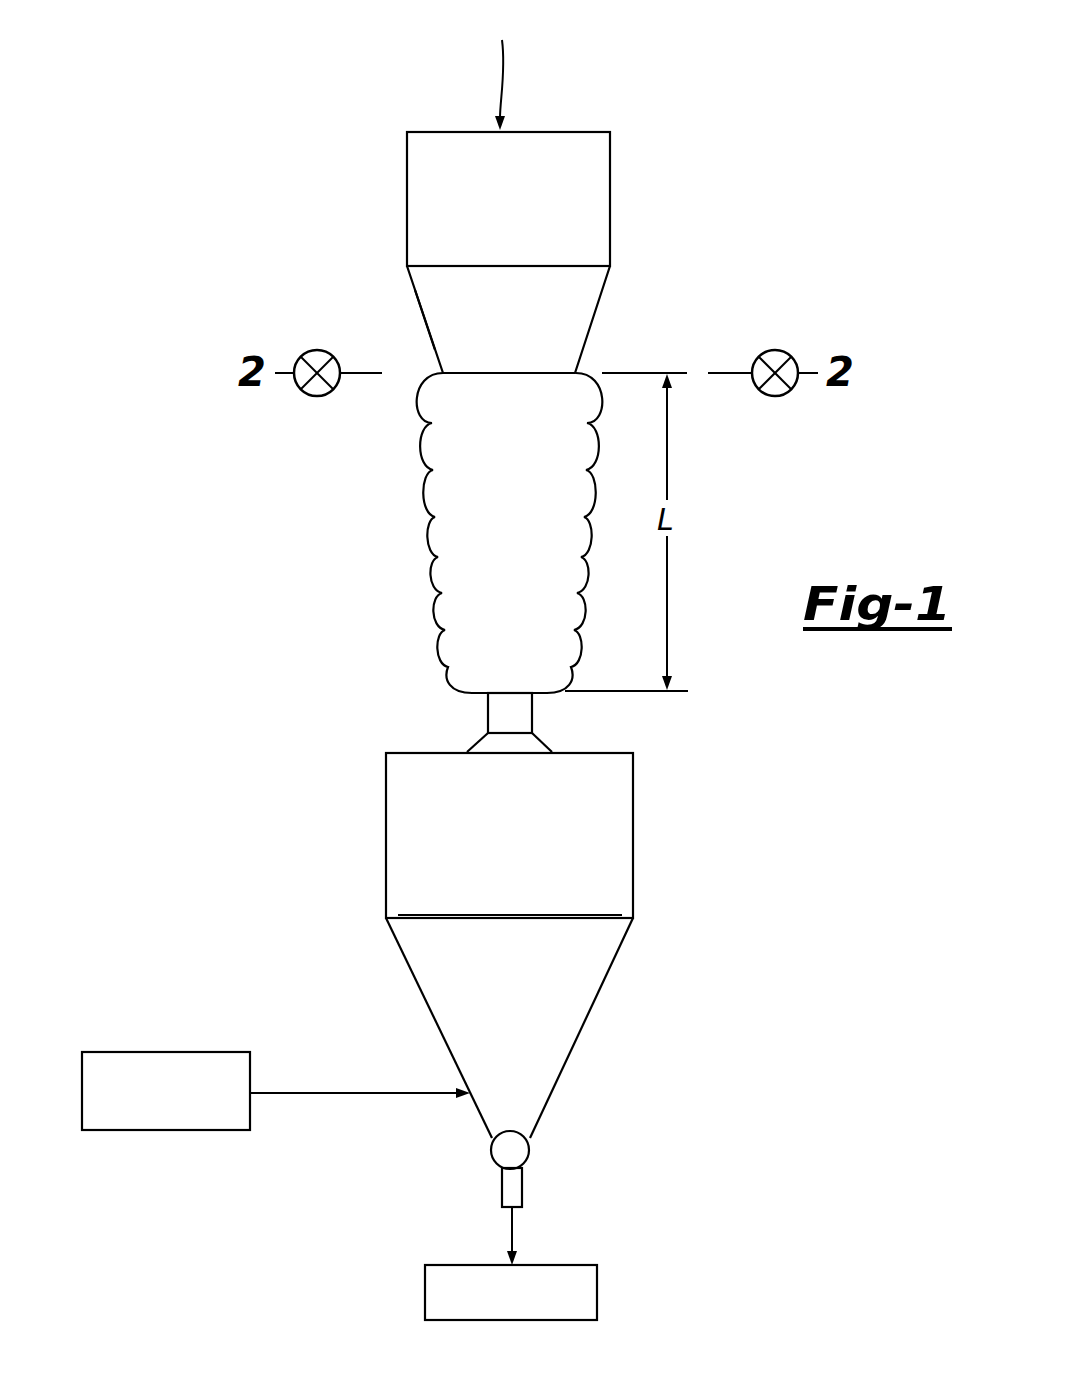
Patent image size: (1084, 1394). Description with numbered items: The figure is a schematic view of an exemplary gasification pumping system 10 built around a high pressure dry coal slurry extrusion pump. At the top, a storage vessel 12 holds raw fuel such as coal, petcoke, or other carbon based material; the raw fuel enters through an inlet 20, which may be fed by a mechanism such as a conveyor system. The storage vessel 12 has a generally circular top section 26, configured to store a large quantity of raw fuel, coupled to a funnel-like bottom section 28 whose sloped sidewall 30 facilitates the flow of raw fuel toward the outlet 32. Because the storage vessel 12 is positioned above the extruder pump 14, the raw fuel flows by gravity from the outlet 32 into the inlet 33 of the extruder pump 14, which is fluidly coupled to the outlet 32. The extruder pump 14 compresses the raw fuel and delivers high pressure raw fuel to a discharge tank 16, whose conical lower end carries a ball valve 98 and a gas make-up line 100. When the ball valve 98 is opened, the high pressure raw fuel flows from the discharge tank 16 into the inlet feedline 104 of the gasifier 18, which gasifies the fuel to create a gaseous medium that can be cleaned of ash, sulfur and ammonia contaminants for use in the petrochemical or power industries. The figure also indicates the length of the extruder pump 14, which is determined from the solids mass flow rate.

The gasification pumping system 10 is at (647, 66).
The storage vessel 12 is at (620, 238).
The extruder pump 14 is at (322, 597).
The discharge tank 16 is at (630, 1015).
The gasifier 18 is at (425, 1292).
The inlet 20 is at (502, 67).
The top section 26 is at (595, 200).
The bottom section 28 is at (580, 303).
The sloped sidewall 30 is at (424, 320).
The outlet 32 is at (508, 373).
The inlet 33 is at (485, 375).
The ball valve 98 is at (530, 1158).
The gas make-up line 100 is at (398, 1093).
The inlet feedline 104 is at (510, 1224).